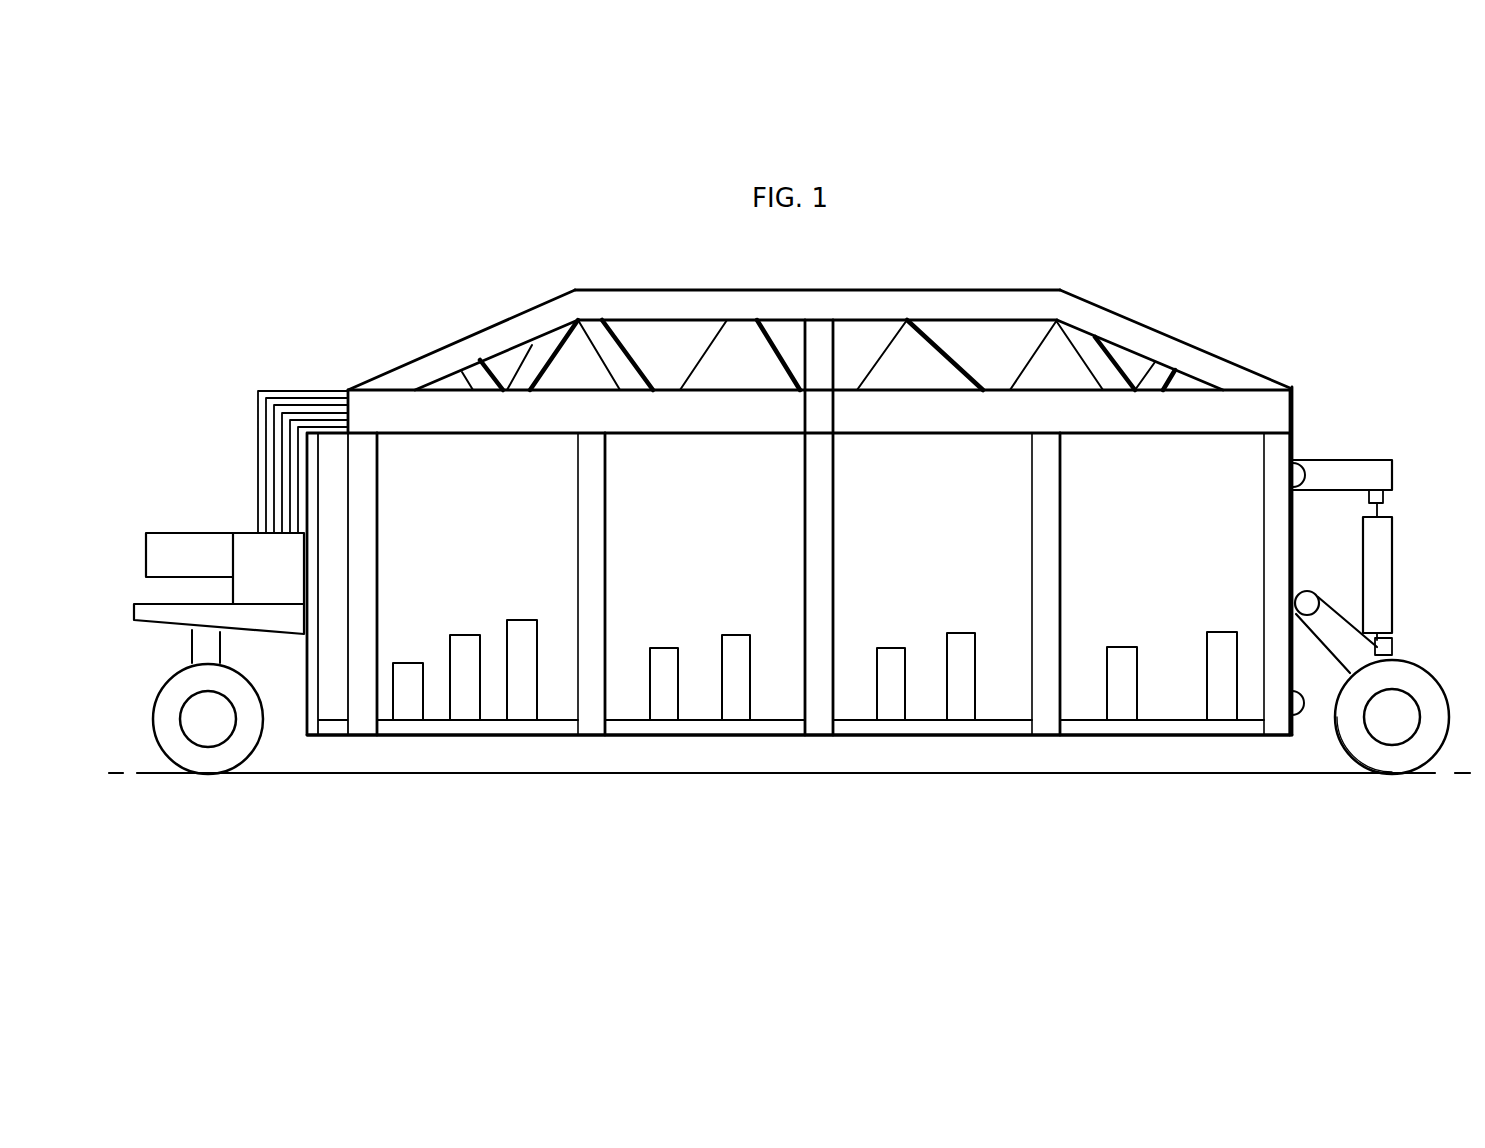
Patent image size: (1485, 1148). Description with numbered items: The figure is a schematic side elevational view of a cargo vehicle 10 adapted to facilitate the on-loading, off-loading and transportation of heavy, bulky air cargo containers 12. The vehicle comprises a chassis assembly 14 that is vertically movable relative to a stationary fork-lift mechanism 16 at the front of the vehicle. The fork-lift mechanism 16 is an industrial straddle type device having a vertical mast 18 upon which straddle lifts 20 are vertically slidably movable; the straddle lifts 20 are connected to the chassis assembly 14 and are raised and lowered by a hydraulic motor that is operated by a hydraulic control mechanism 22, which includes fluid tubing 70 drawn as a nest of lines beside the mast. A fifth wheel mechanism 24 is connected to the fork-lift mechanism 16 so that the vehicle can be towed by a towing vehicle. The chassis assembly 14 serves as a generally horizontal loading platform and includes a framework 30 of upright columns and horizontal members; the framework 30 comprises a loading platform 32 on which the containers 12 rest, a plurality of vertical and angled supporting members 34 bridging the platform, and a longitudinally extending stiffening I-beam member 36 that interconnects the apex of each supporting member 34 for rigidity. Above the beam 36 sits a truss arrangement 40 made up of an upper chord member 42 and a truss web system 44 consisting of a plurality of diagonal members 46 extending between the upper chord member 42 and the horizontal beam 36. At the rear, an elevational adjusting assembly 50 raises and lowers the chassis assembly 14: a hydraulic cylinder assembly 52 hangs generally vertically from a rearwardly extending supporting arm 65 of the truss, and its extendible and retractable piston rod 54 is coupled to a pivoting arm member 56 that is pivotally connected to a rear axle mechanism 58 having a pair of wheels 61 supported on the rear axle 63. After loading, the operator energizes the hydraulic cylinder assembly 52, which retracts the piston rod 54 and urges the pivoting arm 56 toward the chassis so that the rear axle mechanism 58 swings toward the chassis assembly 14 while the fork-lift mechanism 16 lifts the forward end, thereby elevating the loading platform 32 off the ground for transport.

The cargo vehicle 10 is at (548, 260).
The air cargo containers 12 is at (464, 635).
The chassis assembly 14 is at (878, 290).
The fork-lift mechanism 16 is at (292, 690).
The vertical mast 18 is at (320, 488).
The straddle lifts 20 is at (336, 725).
The hydraulic control mechanism 22 is at (250, 585).
The fifth wheel mechanism 24 is at (193, 540).
The framework 30 is at (803, 520).
The loading platform 32 is at (1145, 718).
The supporting members 34 is at (372, 542).
The I-beam member 36 is at (1107, 417).
The truss arrangement 40 is at (638, 288).
The upper chord member 42 is at (762, 290).
The truss web system 44 is at (1087, 295).
The diagonal members 46 is at (950, 346).
The elevational adjusting assembly 50 is at (1322, 403).
The hydraulic cylinder assembly 52 is at (1365, 536).
The piston rod 54 is at (1382, 640).
The pivoting arm member 56 is at (1330, 615).
The rear axle mechanism 58 is at (1380, 750).
The wheel 61 is at (1355, 750).
The rear axle 63 is at (1404, 695).
The supporting arm 65 is at (1342, 467).
The fluid tubing 70 is at (290, 370).